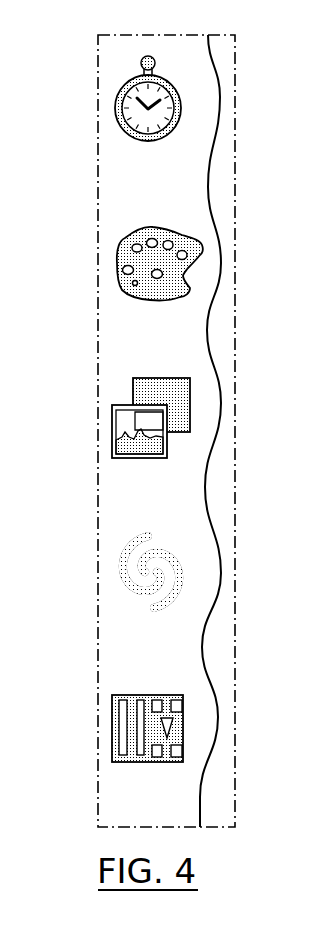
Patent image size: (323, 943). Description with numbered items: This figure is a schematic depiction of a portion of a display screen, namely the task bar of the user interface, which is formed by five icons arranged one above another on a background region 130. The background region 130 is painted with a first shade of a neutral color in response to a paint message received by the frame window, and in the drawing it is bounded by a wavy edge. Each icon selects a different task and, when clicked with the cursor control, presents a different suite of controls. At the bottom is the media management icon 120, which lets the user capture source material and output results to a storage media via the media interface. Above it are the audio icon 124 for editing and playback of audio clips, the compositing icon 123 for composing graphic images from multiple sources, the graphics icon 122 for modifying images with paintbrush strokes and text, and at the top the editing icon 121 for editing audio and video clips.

The media management icon 120 is at (183, 723).
The editing icon 121 is at (188, 102).
The graphics icon 122 is at (193, 272).
The compositing icon 123 is at (200, 403).
The audio icon 124 is at (167, 533).
The background region 130 is at (158, 333).